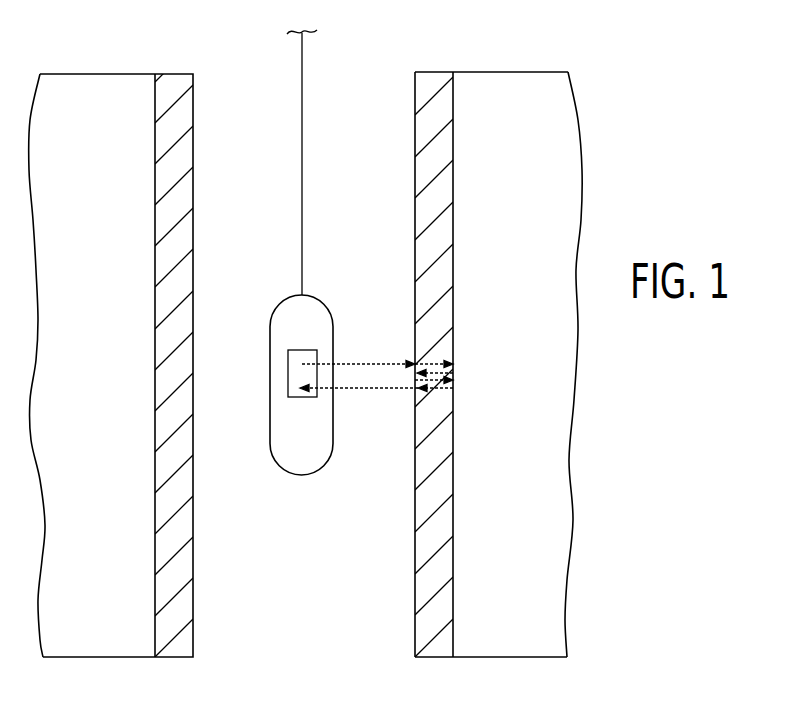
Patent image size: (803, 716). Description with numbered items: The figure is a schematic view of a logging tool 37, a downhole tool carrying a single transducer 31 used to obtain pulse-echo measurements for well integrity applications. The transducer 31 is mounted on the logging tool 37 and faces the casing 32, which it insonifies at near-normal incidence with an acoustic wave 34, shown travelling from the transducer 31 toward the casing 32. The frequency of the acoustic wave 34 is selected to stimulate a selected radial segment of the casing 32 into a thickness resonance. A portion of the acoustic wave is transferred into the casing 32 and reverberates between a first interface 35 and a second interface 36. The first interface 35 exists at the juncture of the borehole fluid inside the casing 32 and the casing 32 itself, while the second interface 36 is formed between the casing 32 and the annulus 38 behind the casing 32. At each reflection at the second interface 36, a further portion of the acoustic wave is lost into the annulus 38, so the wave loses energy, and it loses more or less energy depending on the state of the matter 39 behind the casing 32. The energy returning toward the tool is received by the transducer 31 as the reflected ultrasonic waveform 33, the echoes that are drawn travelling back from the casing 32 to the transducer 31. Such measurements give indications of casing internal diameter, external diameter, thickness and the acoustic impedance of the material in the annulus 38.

The transducer 31 is at (288, 371).
The casing 32 is at (430, 532).
The reflected ultrasonic waveform 33 is at (365, 390).
The acoustic wave 34 is at (350, 363).
The first interface 35 is at (410, 577).
The second interface 36 is at (458, 630).
The logging tool 37 is at (302, 475).
The annulus 38 is at (467, 367).
The matter 39 is at (514, 500).